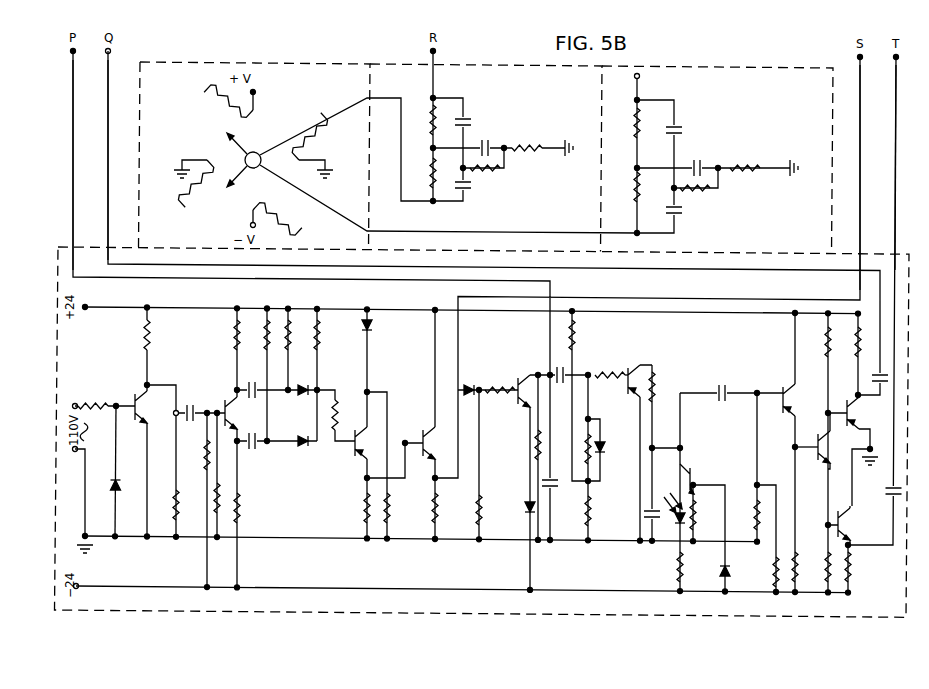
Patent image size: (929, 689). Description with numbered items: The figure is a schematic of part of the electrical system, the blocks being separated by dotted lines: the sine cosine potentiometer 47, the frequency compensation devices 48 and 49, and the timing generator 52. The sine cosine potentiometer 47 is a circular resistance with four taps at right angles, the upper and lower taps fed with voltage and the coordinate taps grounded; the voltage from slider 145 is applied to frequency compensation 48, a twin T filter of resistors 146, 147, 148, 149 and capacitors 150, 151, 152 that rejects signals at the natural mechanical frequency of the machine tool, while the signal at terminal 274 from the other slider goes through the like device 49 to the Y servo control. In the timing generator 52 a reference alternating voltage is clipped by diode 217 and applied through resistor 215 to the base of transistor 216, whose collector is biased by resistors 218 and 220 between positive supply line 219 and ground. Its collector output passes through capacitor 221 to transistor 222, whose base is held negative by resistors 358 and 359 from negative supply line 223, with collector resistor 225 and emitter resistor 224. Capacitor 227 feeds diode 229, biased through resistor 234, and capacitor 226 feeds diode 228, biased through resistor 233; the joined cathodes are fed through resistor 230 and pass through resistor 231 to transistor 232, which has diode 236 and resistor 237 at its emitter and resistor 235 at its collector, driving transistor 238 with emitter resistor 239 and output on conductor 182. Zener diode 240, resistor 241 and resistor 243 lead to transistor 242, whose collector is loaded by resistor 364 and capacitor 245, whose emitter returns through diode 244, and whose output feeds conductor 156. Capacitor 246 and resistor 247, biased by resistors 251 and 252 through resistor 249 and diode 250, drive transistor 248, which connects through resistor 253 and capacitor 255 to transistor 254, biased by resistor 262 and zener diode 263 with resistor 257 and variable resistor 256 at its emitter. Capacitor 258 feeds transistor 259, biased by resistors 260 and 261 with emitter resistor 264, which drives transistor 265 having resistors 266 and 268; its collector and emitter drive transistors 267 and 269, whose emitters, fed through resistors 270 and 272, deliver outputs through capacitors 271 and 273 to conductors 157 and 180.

The sine cosine potentiometer 47 is at (270, 62).
The frequency compensation device 48 is at (502, 65).
The frequency compensation device 49 is at (735, 67).
The timing generator 52 is at (457, 613).
The slider 145 is at (213, 145).
The resistor 146 is at (430, 175).
The resistor 147 is at (430, 125).
The resistor 148 is at (485, 170).
The resistor 149 is at (538, 139).
The capacitor 150 is at (466, 190).
The capacitor 151 is at (485, 143).
The capacitor 152 is at (466, 126).
The conductor 156 is at (73, 100).
The conductor 157 is at (108, 145).
The conductor 180 is at (895, 103).
The conductor 182 is at (860, 162).
The resistor 215 is at (100, 396).
The transistor 216 is at (135, 395).
The diode 217 is at (118, 480).
The resistor 218 is at (145, 335).
The positive supply line 219 is at (216, 304).
The resistor 220 is at (175, 506).
The capacitor 221 is at (190, 407).
The transistor 222 is at (224, 403).
The negative supply line 223 is at (363, 587).
The resistor 224 is at (237, 515).
The resistor 225 is at (236, 336).
The capacitor 226 is at (253, 447).
The capacitor 227 is at (253, 386).
The diode 228 is at (304, 447).
The diode 229 is at (304, 386).
The resistor 230 is at (318, 338).
The resistor 231 is at (336, 417).
The transistor 232 is at (355, 450).
The resistor 233 is at (266, 338).
The resistor 234 is at (289, 338).
The resistor 235 is at (364, 505).
The diode 236 is at (368, 320).
The resistor 237 is at (388, 505).
The transistor 238 is at (421, 452).
The resistor 239 is at (436, 505).
The zener diode 240 is at (470, 385).
The resistor 241 is at (503, 393).
The transistor 242 is at (517, 379).
The resistor 243 is at (480, 508).
The diode 244 is at (528, 510).
The capacitor 245 is at (553, 483).
The capacitor 246 is at (561, 370).
The resistor 247 is at (603, 381).
The transistor 248 is at (628, 363).
The resistor 249 is at (590, 451).
The diode 250 is at (600, 443).
The resistor 251 is at (573, 338).
The resistor 252 is at (600, 505).
The resistor 253 is at (654, 376).
The transistor 254 is at (692, 470).
The capacitor 255 is at (645, 515).
The variable resistor 256 is at (674, 500).
The resistor 257 is at (678, 571).
The capacitor 258 is at (722, 389).
The transistor 259 is at (782, 389).
The resistor 260 is at (774, 569).
The resistor 261 is at (755, 518).
The resistor 262 is at (694, 521).
The zener diode 263 is at (723, 577).
The resistor 264 is at (798, 550).
The transistor 265 is at (826, 445).
The resistor 266 is at (827, 346).
The transistor 267 is at (852, 401).
The resistor 268 is at (826, 576).
The transistor 269 is at (843, 522).
The resistor 270 is at (857, 346).
The capacitor 271 is at (878, 381).
The resistor 272 is at (850, 577).
The capacitor 273 is at (890, 493).
The terminal 274 is at (640, 79).
The resistor 358 is at (204, 452).
The resistor 359 is at (215, 503).
The resistor 364 is at (536, 448).